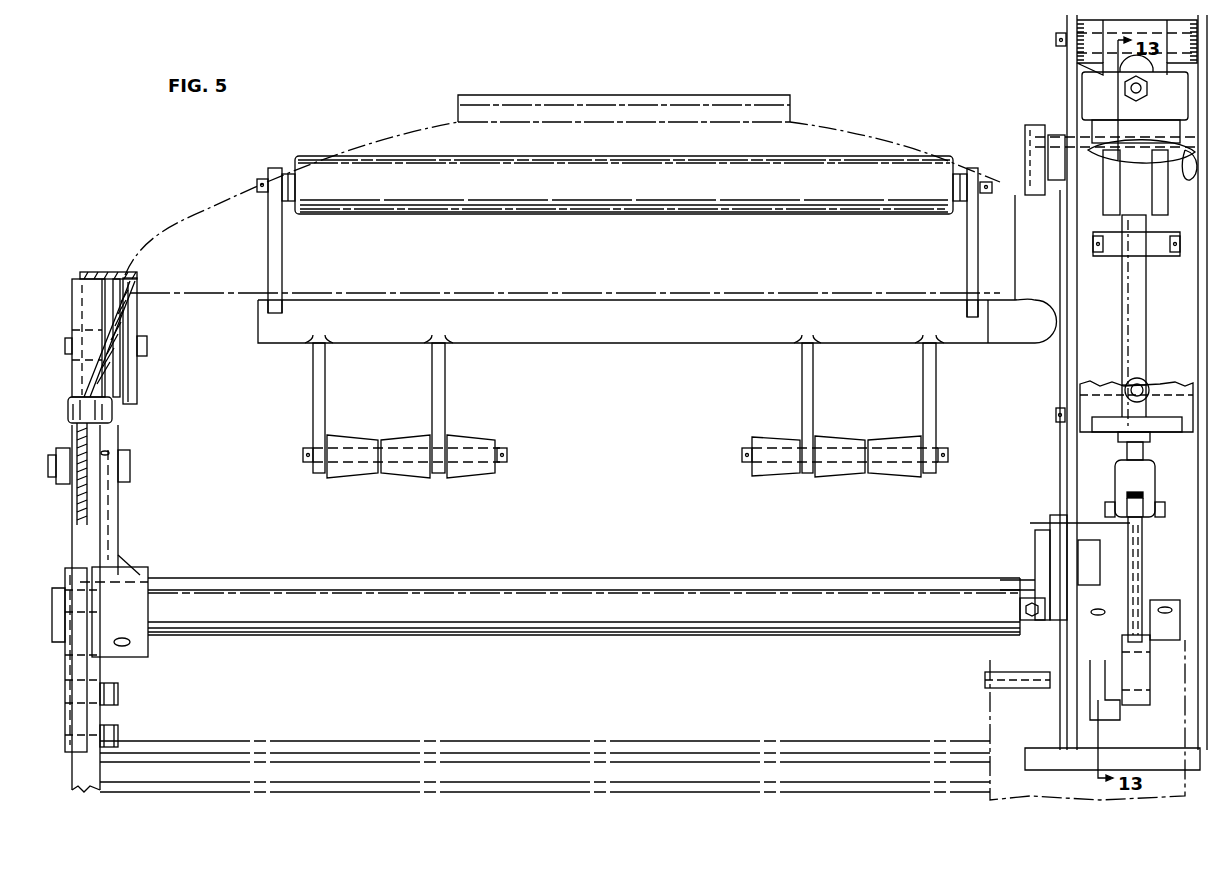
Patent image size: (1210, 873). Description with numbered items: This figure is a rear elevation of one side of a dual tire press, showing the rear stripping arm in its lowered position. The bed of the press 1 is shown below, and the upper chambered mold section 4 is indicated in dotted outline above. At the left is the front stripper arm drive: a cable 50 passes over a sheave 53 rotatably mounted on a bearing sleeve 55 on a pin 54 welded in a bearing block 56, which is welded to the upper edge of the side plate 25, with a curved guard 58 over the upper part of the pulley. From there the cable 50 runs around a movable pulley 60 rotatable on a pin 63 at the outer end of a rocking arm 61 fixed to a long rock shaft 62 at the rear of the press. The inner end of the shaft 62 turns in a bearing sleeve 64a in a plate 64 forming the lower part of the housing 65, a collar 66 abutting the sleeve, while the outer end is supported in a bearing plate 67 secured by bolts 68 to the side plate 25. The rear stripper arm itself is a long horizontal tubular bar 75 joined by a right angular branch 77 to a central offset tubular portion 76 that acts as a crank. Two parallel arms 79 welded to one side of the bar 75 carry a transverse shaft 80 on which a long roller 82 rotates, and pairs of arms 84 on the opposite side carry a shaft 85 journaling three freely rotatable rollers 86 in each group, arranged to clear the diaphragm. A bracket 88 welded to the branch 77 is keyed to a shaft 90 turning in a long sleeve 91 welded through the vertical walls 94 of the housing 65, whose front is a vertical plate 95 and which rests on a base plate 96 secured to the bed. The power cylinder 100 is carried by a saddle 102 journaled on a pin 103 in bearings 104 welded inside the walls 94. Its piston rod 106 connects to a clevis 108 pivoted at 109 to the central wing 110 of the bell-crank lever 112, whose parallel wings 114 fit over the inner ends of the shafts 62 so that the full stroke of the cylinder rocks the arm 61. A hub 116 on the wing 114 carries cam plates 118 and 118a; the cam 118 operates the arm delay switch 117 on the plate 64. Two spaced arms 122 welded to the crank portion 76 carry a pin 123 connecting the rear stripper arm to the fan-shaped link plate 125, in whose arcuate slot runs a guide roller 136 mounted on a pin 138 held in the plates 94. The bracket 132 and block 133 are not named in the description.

The bed of the press 1 is at (818, 742).
The upper chambered mold section 4 is at (185, 225).
The side plate 25 is at (98, 715).
The cable 50 is at (115, 320).
The sheave 53 is at (138, 380).
The pin 54 is at (147, 345).
The bearing sleeve 55 is at (120, 345).
The bearing block 56 is at (80, 370).
The curved guard 58 is at (85, 270).
The movable pulley 60 is at (87, 433).
The rocking arm 61 is at (118, 540).
The rock shaft 62 is at (630, 635).
The pin 63 is at (130, 462).
The plate 64 is at (1050, 545).
The bearing sleeve 64a is at (1025, 633).
The housing 65 is at (1055, 455).
The collar 66 is at (1027, 590).
The bearing plate 67 is at (66, 658).
The bolts 68 is at (118, 692).
The tubular bar 75 is at (645, 343).
The central offset tubular portion 76 is at (1188, 180).
The right angular branch 77 is at (1022, 258).
The parallel arms 79 is at (278, 262).
The transverse shaft 80 is at (263, 192).
The long roller 82 is at (592, 215).
The arms 84 is at (432, 380).
The shaft 85 is at (507, 455).
The rollers 86 is at (388, 475).
The bracket 88 is at (1040, 125).
The shaft 90 is at (1095, 150).
The sleeve 91 is at (1054, 135).
The vertical walls 94 is at (1075, 360).
The vertical plate 95 is at (1185, 355).
The base plate 96 is at (1140, 770).
The power cylinder 100 is at (1135, 99).
The saddle 102 is at (1157, 87).
The pin 103 is at (1058, 48).
The bearings 104 is at (1085, 25).
The piston rod 106 is at (1135, 448).
The clevis 108 is at (1120, 475).
The pivot 109 is at (1158, 500).
The wing 110 is at (1062, 520).
The bell-crank lever 112 is at (1098, 615).
The parallel wings 114 is at (1085, 570).
The hub 116 is at (1160, 540).
The arm delay switch 117 is at (1070, 690).
The cam plate 118 is at (1020, 606).
The cam plate 118a is at (1175, 632).
The spaced arms 122 is at (1158, 212).
The pin 123 is at (1093, 256).
The link plate 125 is at (1142, 290).
The bracket 132 is at (1105, 725).
The block 133 is at (1133, 705).
The guide roller 136 is at (1080, 432).
The pin 138 is at (1056, 410).